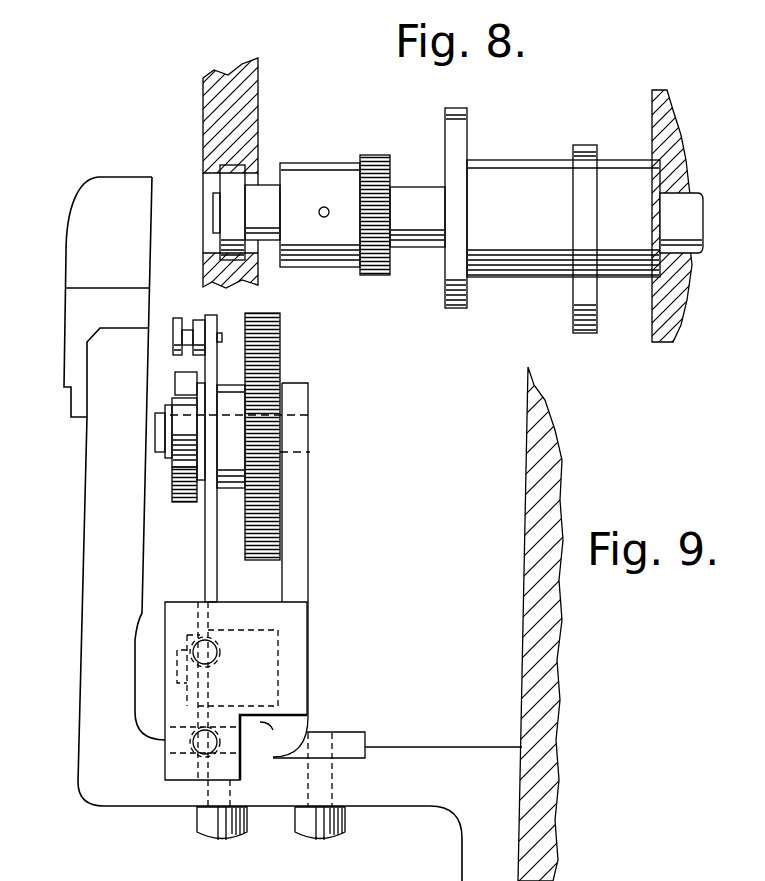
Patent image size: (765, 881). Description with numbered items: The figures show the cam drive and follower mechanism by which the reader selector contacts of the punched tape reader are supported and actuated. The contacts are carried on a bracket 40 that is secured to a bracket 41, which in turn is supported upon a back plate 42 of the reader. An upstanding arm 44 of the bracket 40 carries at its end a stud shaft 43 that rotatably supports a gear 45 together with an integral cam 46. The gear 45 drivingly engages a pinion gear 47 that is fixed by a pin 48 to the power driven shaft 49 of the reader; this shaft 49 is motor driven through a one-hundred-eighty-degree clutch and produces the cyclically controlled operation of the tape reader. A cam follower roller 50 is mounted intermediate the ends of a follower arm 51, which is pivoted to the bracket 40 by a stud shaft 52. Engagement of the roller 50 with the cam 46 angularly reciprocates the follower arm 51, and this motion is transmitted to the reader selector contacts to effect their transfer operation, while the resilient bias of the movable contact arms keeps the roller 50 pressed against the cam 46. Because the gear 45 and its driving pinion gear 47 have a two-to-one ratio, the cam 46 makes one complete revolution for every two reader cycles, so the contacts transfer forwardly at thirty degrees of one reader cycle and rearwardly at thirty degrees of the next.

In FIG. 9, the bracket 40 is at (258, 745).
In FIG. 9, the bracket 41 is at (82, 686).
In FIG. 9, the back plate 42 is at (543, 833).
In FIG. 9, the stud shaft 43 is at (293, 428).
In FIG. 9, the upstanding arm 44 is at (303, 502).
In FIG. 9, the gear 45 is at (283, 337).
In FIG. 9, the cam 46 is at (187, 502).
In FIG. 8, the pinion gear 47 is at (372, 276).
In FIG. 8, the pin 48 is at (325, 207).
In FIG. 8, the power driven shaft 49 is at (418, 252).
In FIG. 9, the cam follower roller 50 is at (178, 390).
In FIG. 9, the follower arm 51 is at (207, 554).
In FIG. 9, the stud shaft 52 is at (178, 690).